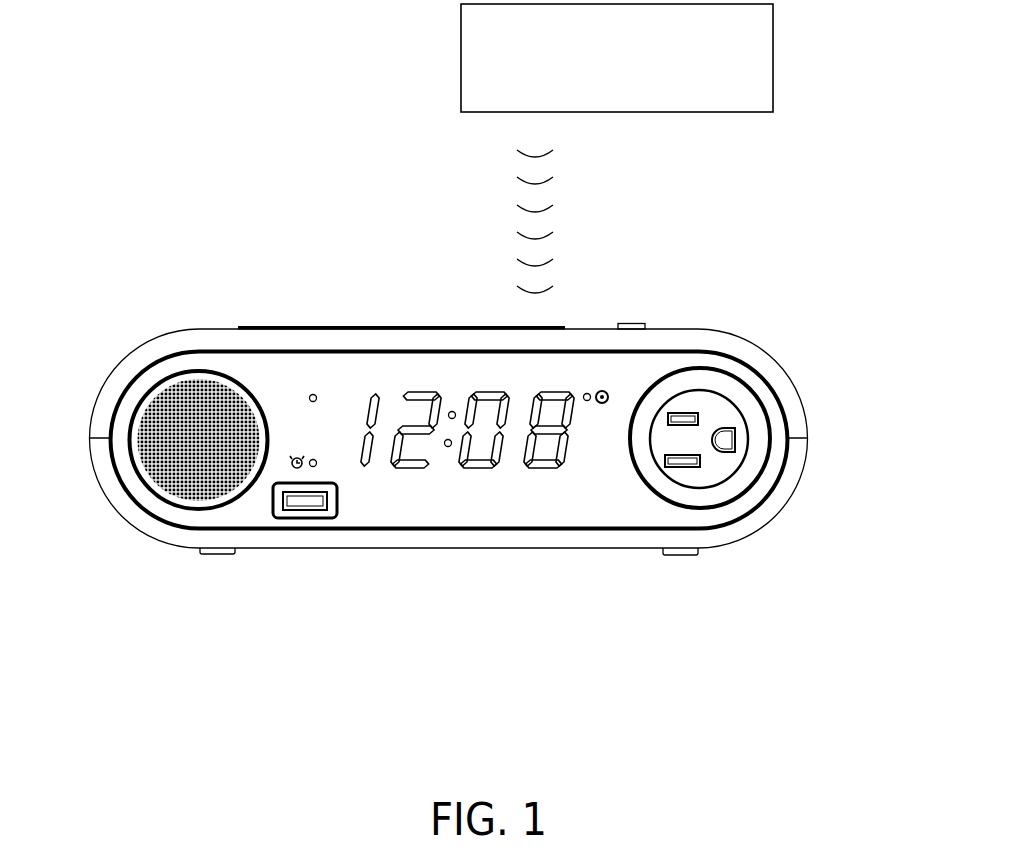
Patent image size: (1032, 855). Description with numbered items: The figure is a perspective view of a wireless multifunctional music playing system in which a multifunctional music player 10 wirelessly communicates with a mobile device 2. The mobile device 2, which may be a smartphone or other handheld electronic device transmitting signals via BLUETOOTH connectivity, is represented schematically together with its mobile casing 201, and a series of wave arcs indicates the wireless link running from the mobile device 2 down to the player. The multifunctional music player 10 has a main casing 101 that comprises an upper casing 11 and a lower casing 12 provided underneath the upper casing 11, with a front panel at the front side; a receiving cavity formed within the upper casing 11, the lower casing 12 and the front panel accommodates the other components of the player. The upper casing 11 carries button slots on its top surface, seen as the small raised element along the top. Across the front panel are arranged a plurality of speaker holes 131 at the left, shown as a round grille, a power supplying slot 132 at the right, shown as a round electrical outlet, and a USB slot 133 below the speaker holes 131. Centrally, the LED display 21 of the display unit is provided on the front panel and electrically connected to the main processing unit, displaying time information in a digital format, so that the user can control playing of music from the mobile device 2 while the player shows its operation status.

The mobile device 2 is at (617, 148).
The mobile casing 201 is at (591, 79).
The multifunctional music player 10 is at (222, 306).
The upper casing 11 is at (326, 335).
The lower casing 12 is at (469, 545).
The LED display 21 is at (565, 495).
The main casing 101 is at (714, 256).
The speaker holes 131 is at (131, 418).
The power supplying slot 132 is at (764, 431).
The USB slot 133 is at (302, 513).